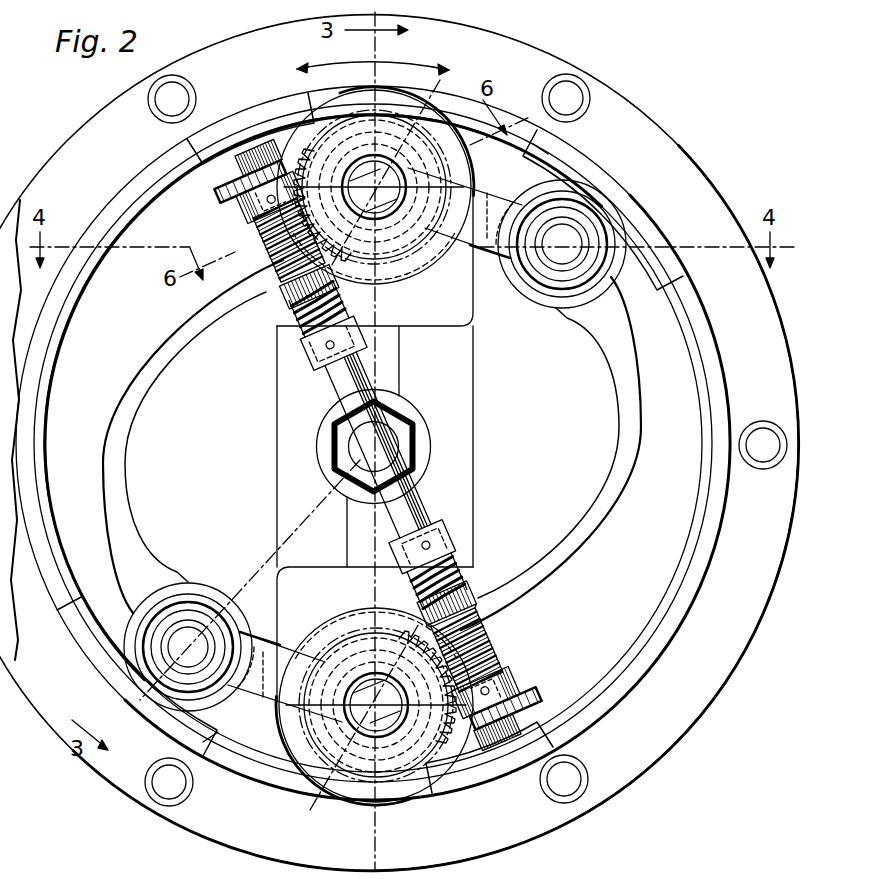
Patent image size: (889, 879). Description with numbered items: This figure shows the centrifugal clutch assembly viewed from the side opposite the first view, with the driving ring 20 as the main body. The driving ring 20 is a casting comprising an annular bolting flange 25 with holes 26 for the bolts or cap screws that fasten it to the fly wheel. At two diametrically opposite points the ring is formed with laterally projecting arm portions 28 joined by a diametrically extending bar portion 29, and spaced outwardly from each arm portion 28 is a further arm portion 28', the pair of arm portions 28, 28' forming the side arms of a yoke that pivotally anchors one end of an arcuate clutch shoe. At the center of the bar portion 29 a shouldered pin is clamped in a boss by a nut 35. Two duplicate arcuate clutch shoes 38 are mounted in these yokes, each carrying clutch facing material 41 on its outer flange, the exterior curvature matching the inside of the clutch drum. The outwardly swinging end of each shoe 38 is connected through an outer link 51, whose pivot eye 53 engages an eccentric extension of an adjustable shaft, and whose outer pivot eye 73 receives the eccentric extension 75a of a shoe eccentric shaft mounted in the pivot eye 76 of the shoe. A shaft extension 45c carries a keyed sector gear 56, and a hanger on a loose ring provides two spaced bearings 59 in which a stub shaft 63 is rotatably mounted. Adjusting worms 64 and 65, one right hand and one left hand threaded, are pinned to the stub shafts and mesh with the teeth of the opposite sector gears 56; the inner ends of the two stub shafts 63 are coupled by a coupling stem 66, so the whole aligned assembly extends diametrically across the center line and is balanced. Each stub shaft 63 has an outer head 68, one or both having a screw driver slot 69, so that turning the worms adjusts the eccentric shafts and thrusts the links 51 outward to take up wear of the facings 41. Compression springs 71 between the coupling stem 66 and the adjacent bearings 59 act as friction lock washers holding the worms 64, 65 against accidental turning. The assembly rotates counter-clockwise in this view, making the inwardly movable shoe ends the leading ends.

The driving ring 20 is at (87, 128).
The annular bolting flange 25 is at (634, 135).
The holes 26 is at (166, 112).
The arm portions 28 is at (361, 432).
The arm portions 28' is at (371, 456).
The bar portion 29 is at (277, 482).
The nut 35 is at (407, 450).
The arcuate clutch shoes 38 is at (135, 423).
The clutch facing material 41 is at (109, 222).
The shaft extension 45c is at (375, 446).
The outer link 51 is at (485, 193).
The pivot eye 53 is at (433, 112).
The sector gear 56 is at (322, 196).
The bearings 59 is at (243, 210).
The stub shaft 63 is at (306, 355).
The adjusting worm 64 is at (265, 247).
The adjusting worm 65 is at (481, 618).
The coupling stem 66 is at (368, 434).
The outer heads 68 is at (230, 192).
The screw driver slot 69 is at (252, 150).
The compression springs 71 is at (296, 319).
The pivot eye 73 is at (580, 207).
The eccentric extension 75a is at (560, 232).
The pivot eye 76 is at (545, 323).